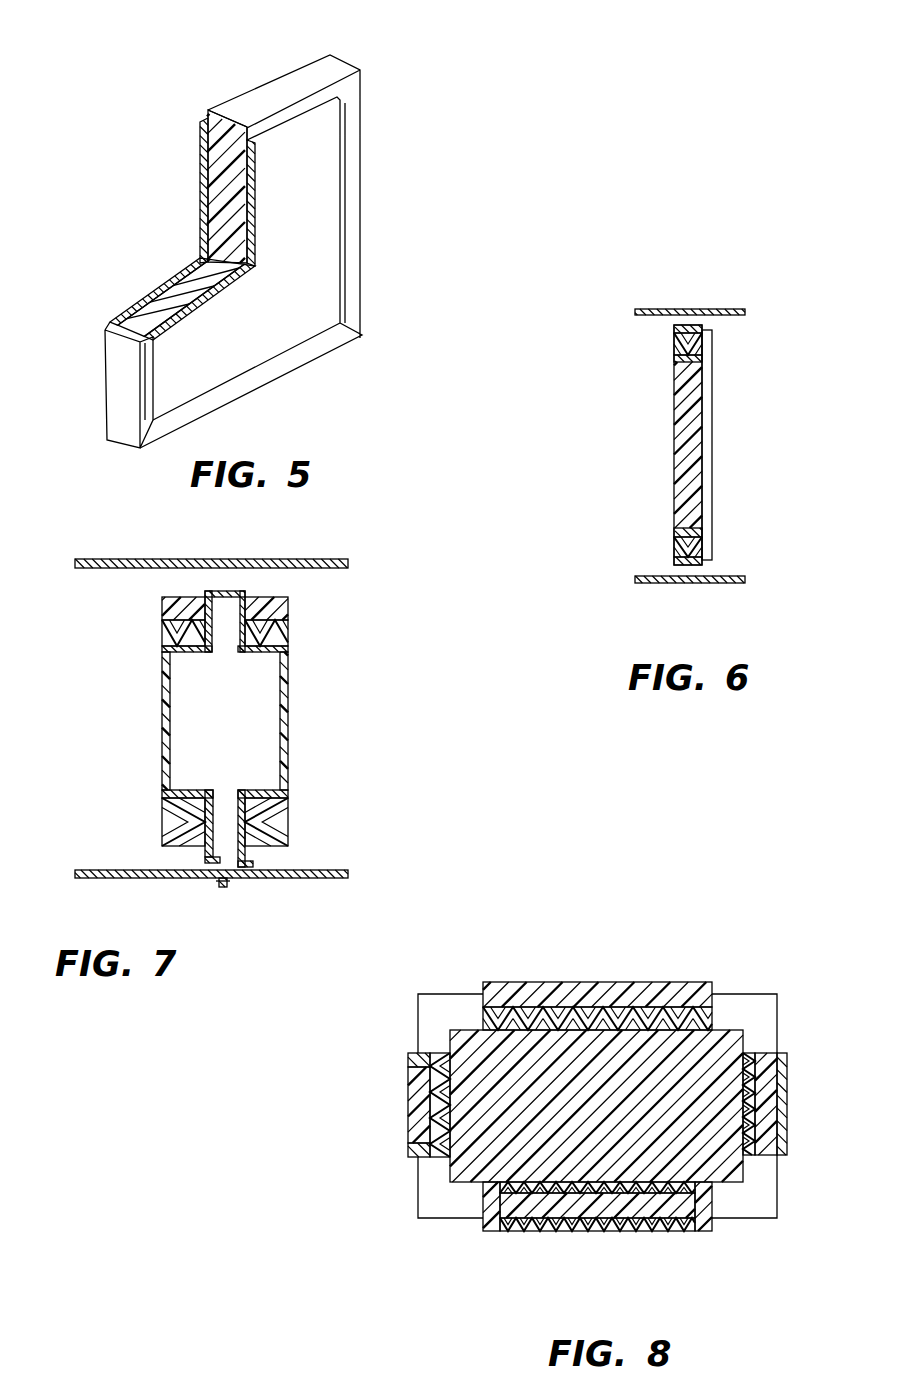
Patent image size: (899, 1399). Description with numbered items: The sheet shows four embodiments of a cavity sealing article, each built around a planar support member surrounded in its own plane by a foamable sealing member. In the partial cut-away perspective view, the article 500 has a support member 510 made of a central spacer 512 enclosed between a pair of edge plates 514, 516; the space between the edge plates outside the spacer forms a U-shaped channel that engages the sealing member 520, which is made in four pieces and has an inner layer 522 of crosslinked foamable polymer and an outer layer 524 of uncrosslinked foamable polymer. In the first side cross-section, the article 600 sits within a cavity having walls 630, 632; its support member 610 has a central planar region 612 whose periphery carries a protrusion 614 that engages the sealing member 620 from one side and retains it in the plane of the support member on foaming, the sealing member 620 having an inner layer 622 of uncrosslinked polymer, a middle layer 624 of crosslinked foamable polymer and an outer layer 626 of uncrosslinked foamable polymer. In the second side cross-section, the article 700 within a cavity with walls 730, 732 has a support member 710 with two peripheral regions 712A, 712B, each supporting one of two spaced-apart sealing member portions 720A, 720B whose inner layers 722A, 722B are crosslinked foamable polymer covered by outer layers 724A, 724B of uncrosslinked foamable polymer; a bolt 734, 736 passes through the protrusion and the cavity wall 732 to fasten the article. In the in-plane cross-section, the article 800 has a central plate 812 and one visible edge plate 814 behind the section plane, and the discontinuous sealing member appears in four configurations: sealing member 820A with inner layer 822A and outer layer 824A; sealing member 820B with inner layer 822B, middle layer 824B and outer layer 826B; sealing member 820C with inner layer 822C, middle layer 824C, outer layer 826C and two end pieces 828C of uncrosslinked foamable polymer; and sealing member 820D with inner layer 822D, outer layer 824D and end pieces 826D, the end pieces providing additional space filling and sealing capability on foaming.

In FIG. 5, the cavity sealing article 500 is at (194, 231).
In FIG. 5, the planar support member 510 is at (161, 204).
In FIG. 5, the central spacer 512 is at (213, 192).
In FIG. 5, the edge plate 514 is at (153, 293).
In FIG. 5, the edge plate 516 is at (318, 257).
In FIG. 5, the sealing member 520 is at (233, 231).
In FIG. 5, the inner layer 522 is at (233, 170).
In FIG. 5, the outer layer 524 is at (213, 128).
In FIG. 6, the cavity sealing article 600 is at (690, 427).
In FIG. 6, the planar support member 610 is at (759, 442).
In FIG. 6, the central planar region 612 is at (707, 397).
In FIG. 6, the protrusion 614 is at (708, 350).
In FIG. 6, the sealing member 620 is at (624, 427).
In FIG. 6, the inner layer 622 is at (675, 357).
In FIG. 6, the middle layer 624 is at (675, 347).
In FIG. 6, the outer layer 626 is at (675, 330).
In FIG. 6, the cavity wall 630 is at (743, 313).
In FIG. 6, the cavity wall 632 is at (743, 577).
In FIG. 7, the cavity sealing article 700 is at (217, 725).
In FIG. 7, the planar support member 710 is at (226, 719).
In FIG. 7, the peripheral region 712A is at (163, 652).
In FIG. 7, the peripheral region 712B is at (285, 652).
In FIG. 7, the sealing member portion 720A is at (146, 817).
In FIG. 7, the sealing member portion 720B is at (306, 821).
In FIG. 7, the inner layer 722A is at (163, 635).
In FIG. 7, the inner layer 722B is at (285, 643).
In FIG. 7, the left outer layer 724A is at (163, 603).
In FIG. 7, the right outer layer 724B is at (275, 610).
In FIG. 7, the cavity wall 730 is at (315, 562).
In FIG. 7, the cavity wall 732 is at (334, 868).
In FIG. 7, the bolt 734 is at (212, 858).
In FIG. 7, the bolt 736 is at (217, 882).
In FIG. 8, the cavity sealing article 800 is at (569, 1095).
In FIG. 8, the central plate 812 is at (730, 1043).
In FIG. 8, the edge plate 814 is at (448, 1008).
In FIG. 8, the sealing member 820A is at (626, 947).
In FIG. 8, the sealing member 820B is at (817, 1107).
In FIG. 8, the sealing member 820C is at (628, 1254).
In FIG. 8, the sealing member 820D is at (348, 1105).
In FIG. 8, the inner layer 822A is at (560, 1003).
In FIG. 8, the inner layer 822B is at (751, 1162).
In FIG. 8, the inner layer 822C is at (594, 1228).
In FIG. 8, the inner layer 822D is at (410, 1095).
In FIG. 8, the outer layer 824A is at (597, 990).
In FIG. 8, the middle layer 824B is at (778, 1166).
In FIG. 8, the middle layer 824C is at (650, 1228).
In FIG. 8, the outer layer 824D is at (420, 1128).
In FIG. 8, the outer layer 826B is at (785, 1108).
In FIG. 8, the outer layer 826C is at (667, 1230).
In FIG. 8, the pieces of uncrosslinked foamable polymer 826D is at (410, 1060).
In FIG. 8, the pieces of uncrosslinked foamable polymer 828C is at (492, 1228).